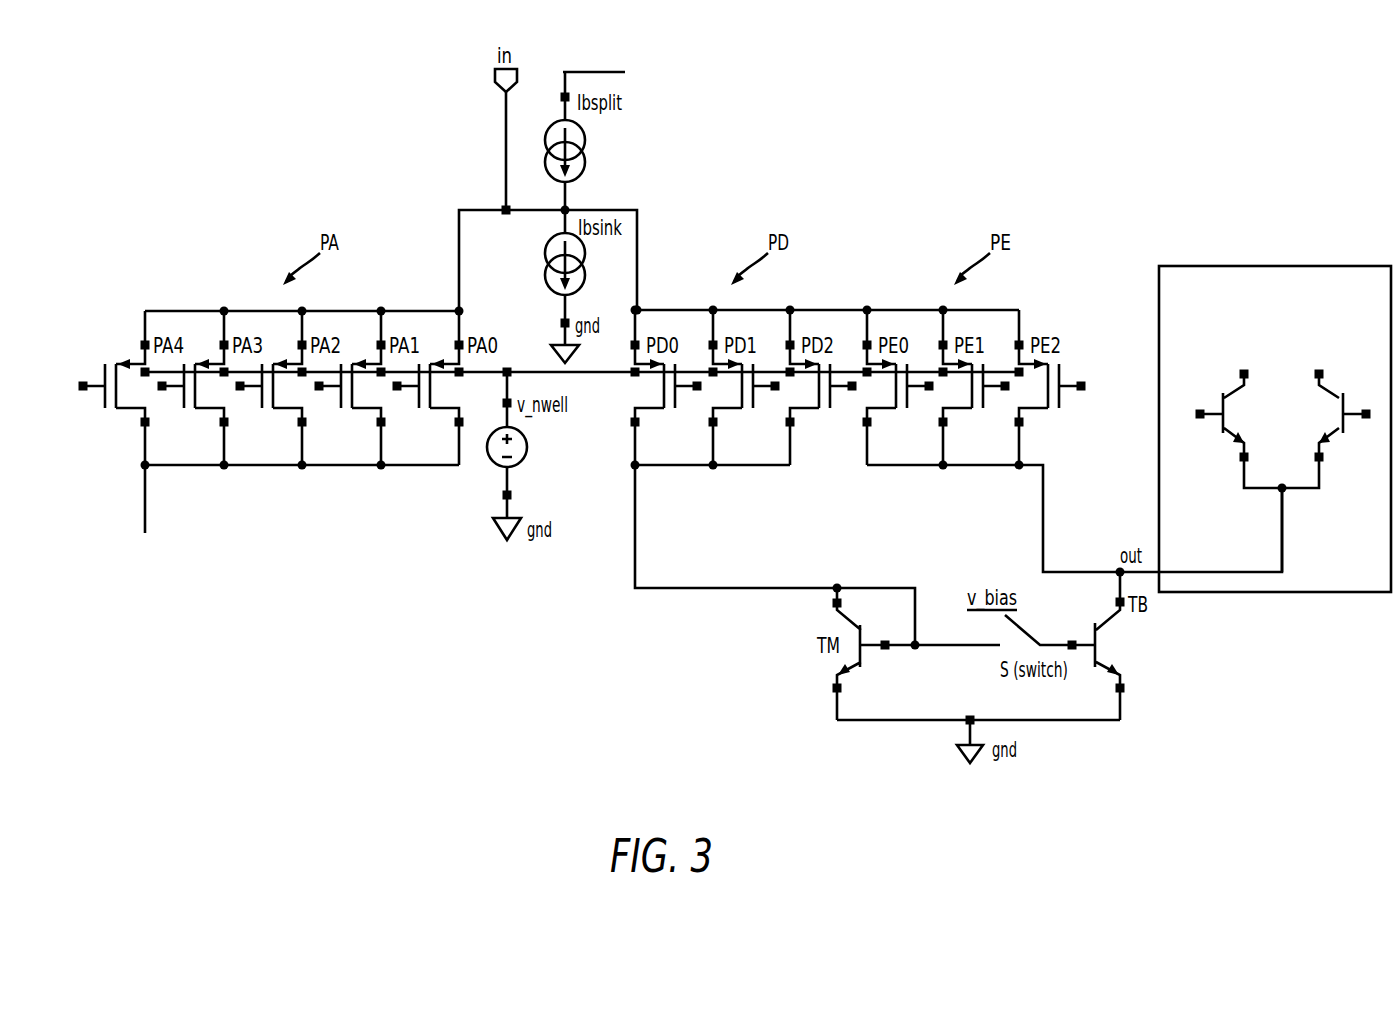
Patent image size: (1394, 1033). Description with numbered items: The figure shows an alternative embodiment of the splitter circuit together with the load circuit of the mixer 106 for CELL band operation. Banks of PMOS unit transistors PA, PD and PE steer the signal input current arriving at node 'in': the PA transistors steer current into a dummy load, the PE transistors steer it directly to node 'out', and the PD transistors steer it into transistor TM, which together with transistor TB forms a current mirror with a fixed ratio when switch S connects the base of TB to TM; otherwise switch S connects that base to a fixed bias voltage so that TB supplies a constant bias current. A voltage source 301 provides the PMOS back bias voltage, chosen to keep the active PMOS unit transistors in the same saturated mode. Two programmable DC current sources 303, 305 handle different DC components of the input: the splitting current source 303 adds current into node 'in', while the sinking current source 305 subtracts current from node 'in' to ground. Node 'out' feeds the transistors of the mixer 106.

The voltage source 301 is at (527, 447).
The DC current source 303 is at (587, 140).
The DC current source 305 is at (587, 250).
The mixer 106 is at (1313, 265).